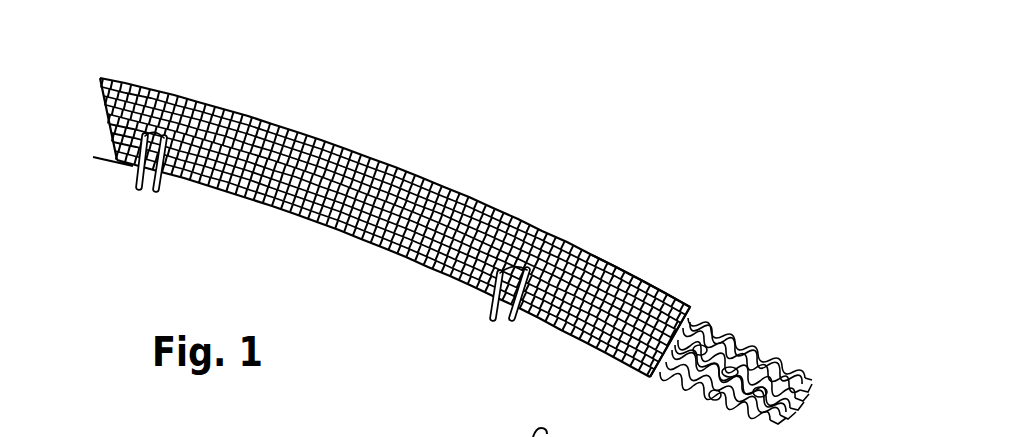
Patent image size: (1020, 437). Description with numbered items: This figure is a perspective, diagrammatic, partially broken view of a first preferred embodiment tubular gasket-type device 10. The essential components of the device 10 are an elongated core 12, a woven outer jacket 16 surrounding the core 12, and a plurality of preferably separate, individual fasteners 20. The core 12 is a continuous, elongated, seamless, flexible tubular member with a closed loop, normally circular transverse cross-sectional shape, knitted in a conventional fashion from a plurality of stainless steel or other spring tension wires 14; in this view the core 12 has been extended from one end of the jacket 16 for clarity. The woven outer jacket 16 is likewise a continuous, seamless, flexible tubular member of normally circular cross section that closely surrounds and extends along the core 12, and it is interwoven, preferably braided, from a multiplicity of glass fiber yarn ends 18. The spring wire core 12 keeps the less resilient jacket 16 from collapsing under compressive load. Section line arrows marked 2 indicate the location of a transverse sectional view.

The tubular gasket-type device 10 is at (372, 140).
The elongated core 12 is at (717, 330).
The spring tension wires 14 is at (768, 363).
The woven outer jacket 16 is at (624, 264).
The glass fiber yarn ends 18 is at (660, 294).
The fasteners 20 is at (135, 173).
The section line for FIG. 2 is at (175, 257).